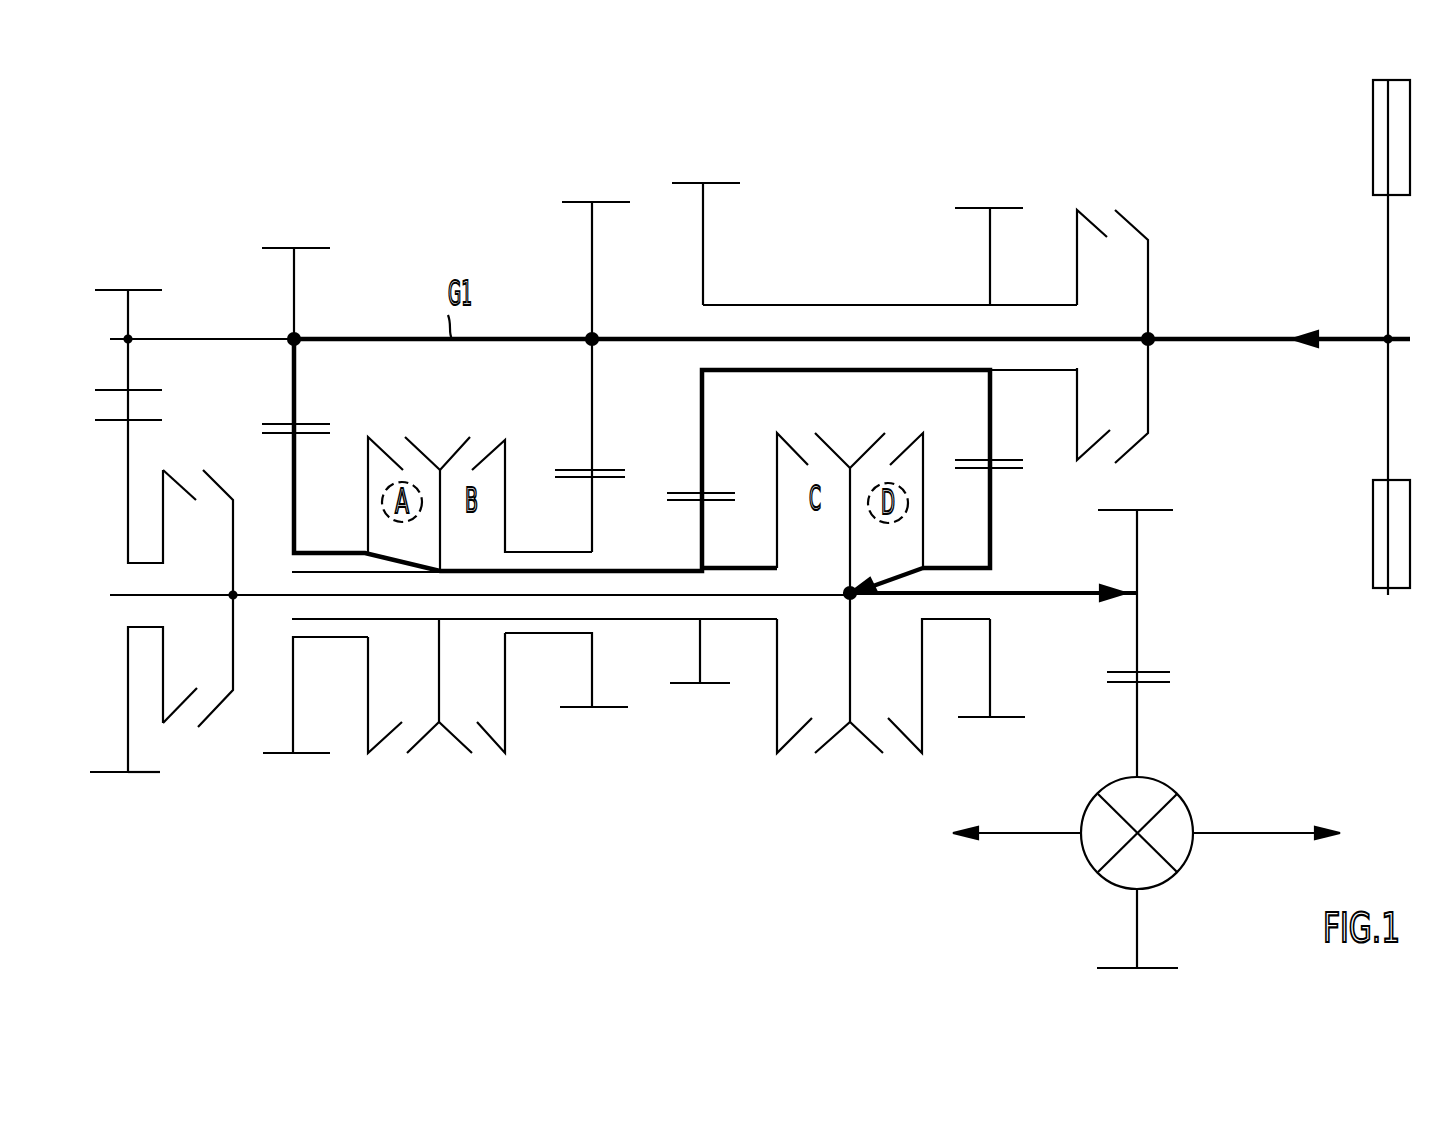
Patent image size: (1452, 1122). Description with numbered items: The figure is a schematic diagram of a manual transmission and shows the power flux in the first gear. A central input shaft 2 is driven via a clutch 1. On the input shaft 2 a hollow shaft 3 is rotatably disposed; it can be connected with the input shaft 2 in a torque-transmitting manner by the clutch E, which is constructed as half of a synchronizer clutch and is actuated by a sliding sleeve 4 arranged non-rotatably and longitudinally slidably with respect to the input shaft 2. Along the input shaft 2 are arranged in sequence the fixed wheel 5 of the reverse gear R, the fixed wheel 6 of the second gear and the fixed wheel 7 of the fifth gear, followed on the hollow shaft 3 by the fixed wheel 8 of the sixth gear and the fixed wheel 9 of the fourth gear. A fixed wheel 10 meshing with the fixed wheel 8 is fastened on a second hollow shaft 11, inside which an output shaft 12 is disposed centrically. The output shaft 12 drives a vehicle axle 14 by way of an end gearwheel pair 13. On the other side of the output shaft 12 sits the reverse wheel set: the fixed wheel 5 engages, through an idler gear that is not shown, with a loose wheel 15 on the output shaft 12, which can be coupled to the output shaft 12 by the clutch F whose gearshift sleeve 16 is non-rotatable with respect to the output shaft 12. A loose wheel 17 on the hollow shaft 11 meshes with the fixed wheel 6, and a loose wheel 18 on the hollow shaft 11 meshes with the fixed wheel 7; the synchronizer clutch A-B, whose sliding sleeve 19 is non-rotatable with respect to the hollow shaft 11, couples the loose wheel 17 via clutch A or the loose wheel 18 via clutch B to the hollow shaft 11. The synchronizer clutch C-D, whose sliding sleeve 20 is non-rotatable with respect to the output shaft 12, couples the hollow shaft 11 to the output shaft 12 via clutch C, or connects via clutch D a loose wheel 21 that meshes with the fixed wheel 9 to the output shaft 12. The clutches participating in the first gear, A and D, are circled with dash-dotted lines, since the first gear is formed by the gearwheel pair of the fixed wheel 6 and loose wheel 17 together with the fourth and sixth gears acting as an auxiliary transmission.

The clutch 1 is at (1385, 532).
The input shaft 2 is at (1245, 337).
The hollow shaft 3 is at (830, 305).
The sliding sleeve 4 is at (1148, 268).
The fixed wheel of the reverse gear 5 is at (128, 310).
The fixed wheel of the second gear 6 is at (294, 292).
The fixed wheel of the fifth gear 7 is at (592, 245).
The fixed wheel of the sixth gear 8 is at (703, 238).
The fixed wheel of the fourth gear 9 is at (990, 255).
The fixed wheel 10 is at (700, 645).
The second hollow shaft 11 is at (650, 612).
The output shaft 12 is at (270, 598).
The end gearwheel pair 13 is at (1137, 712).
The vehicle axle 14 is at (1033, 837).
The loose wheel 15 is at (128, 742).
The gearshift sleeve 16 is at (233, 548).
The loose wheel 17 is at (292, 478).
The loose wheel 18 is at (590, 511).
The sliding sleeve 19 is at (439, 675).
The sliding sleeve 20 is at (850, 650).
The loose wheel 21 is at (990, 668).